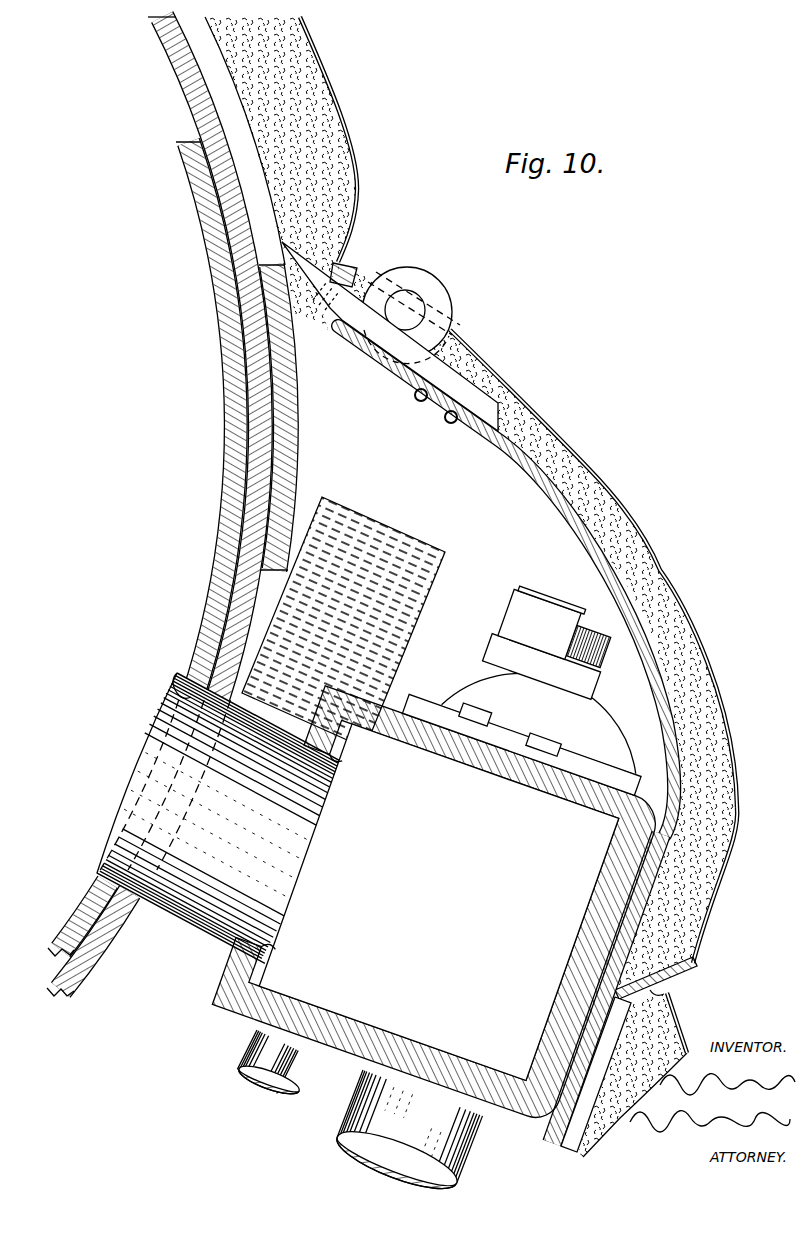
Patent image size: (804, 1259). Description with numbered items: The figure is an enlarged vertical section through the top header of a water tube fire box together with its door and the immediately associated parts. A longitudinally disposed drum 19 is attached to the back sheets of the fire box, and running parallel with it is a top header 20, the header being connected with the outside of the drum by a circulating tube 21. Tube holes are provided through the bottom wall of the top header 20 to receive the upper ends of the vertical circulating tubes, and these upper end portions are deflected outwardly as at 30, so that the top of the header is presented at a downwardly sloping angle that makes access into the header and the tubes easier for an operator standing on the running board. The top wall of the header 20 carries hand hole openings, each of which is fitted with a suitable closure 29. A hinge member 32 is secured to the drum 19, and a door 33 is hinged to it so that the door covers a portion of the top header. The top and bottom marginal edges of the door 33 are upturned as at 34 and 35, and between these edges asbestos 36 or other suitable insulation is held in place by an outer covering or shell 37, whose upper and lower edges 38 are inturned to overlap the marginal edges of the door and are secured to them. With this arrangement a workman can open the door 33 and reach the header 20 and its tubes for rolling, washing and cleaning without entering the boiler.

The drum 19 is at (190, 100).
The top header 20 is at (464, 830).
The circulating tube 21 is at (180, 698).
The closure 29 is at (540, 797).
The outwardly deflected portion 30 is at (375, 1105).
The hinge member 32 is at (267, 237).
The door 33 is at (537, 505).
The upturned top marginal edge 34 is at (407, 312).
The upturned bottom marginal edge 35 is at (695, 965).
The asbestos insulation 36 is at (663, 613).
The outer covering 37 is at (628, 520).
The inturned edge 38 is at (347, 257).